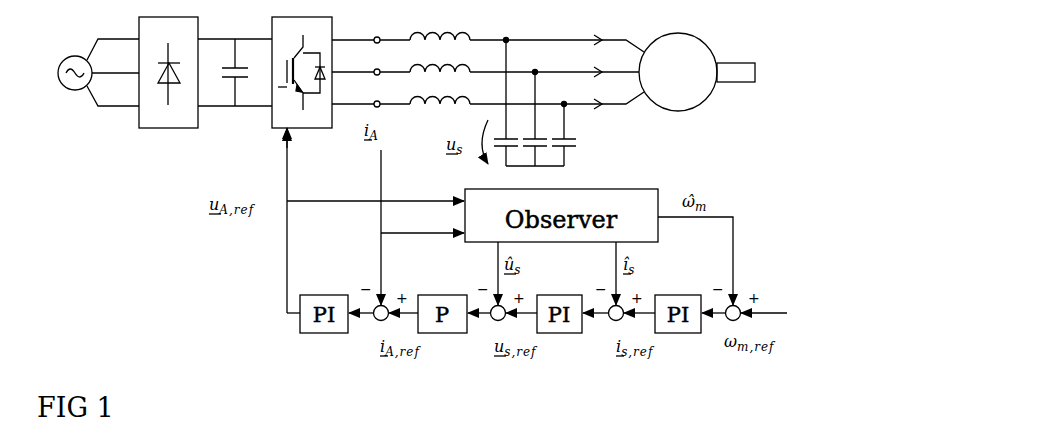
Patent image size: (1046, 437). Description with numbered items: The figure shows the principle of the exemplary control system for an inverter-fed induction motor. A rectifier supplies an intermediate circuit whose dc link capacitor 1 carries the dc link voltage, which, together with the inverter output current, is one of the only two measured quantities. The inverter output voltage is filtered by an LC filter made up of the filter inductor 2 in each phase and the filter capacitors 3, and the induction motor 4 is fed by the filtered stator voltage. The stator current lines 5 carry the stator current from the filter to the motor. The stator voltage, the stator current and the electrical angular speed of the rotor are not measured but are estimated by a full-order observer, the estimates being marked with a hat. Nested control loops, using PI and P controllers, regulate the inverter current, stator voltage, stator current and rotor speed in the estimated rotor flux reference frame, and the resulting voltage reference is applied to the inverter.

The dc link capacitor 1 is at (231, 56).
The LC filter inductor 2 is at (440, 52).
The LC filter capacitor 3 is at (547, 102).
The induction motor 4 is at (737, 48).
The stator current lines 5 is at (603, 19).